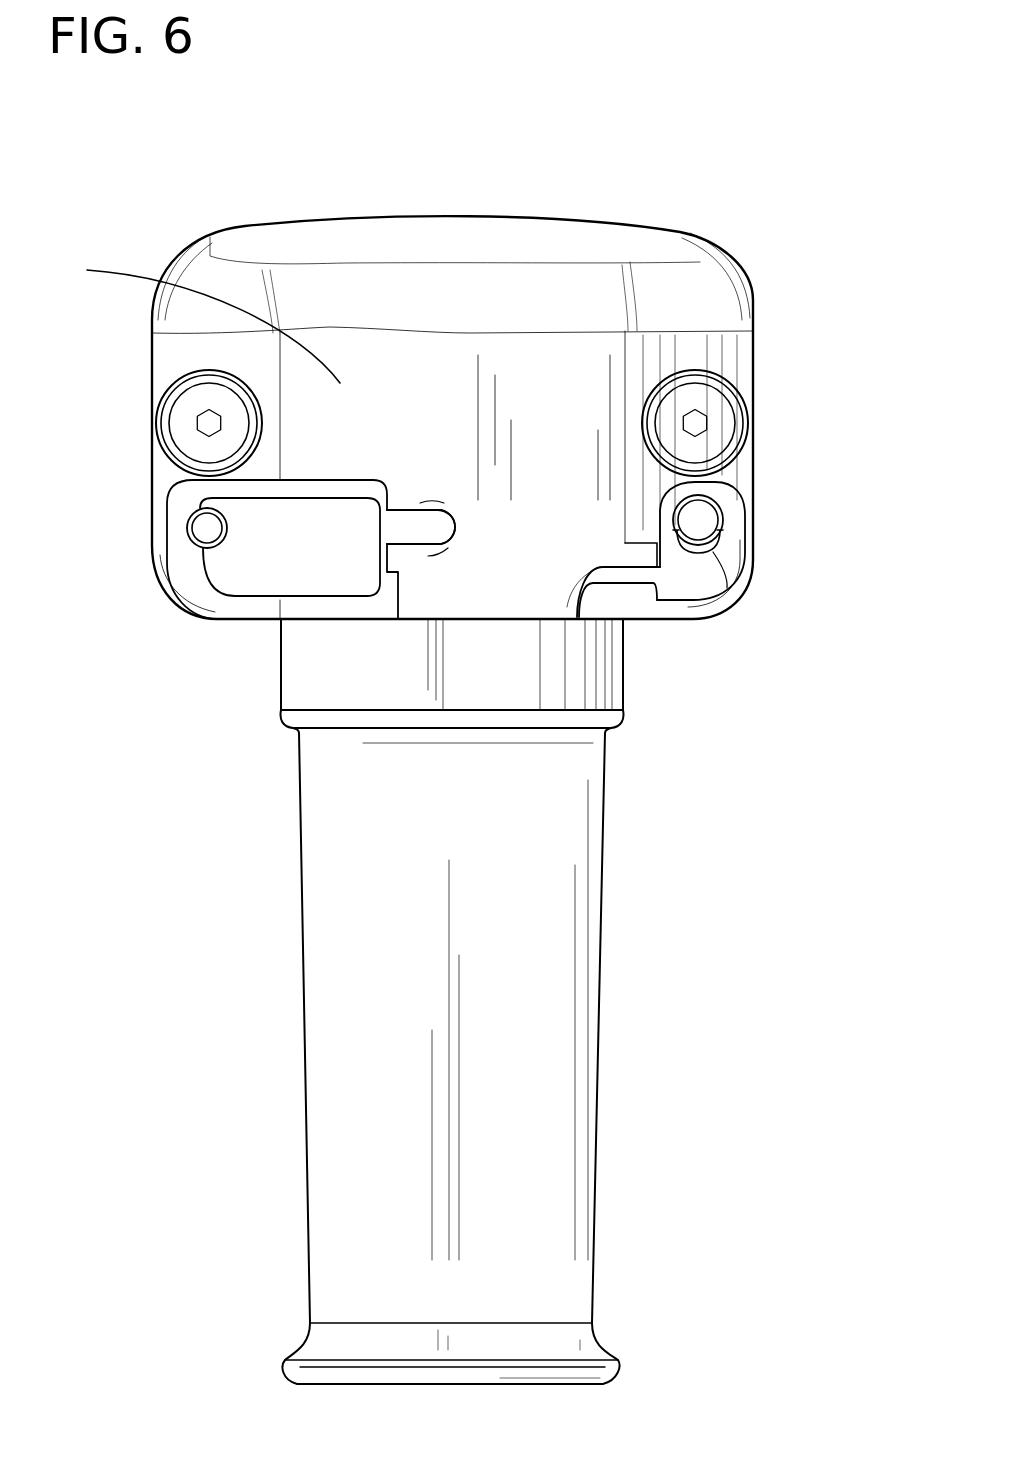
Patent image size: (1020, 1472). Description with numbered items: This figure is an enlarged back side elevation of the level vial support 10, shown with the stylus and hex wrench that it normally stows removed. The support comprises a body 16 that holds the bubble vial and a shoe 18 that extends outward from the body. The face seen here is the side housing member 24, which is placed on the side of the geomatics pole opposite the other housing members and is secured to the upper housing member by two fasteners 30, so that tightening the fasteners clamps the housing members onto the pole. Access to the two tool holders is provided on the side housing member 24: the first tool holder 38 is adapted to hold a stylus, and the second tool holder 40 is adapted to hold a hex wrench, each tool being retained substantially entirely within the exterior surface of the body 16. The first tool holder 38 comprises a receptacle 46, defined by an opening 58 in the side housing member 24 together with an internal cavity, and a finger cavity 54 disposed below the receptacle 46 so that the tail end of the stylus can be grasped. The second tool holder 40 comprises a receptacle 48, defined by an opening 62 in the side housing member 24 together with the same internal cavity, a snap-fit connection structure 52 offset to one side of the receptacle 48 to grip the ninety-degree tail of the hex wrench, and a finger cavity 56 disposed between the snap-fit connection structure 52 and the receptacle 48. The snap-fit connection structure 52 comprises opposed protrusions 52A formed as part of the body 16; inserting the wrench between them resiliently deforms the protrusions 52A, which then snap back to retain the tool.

The level vial support 10 is at (762, 217).
The body 16 is at (752, 348).
The shoe 18 is at (598, 1035).
The side housing member 24 is at (195, 318).
The fasteners 30 is at (185, 410).
The first tool holder 38 is at (734, 639).
The second tool holder 40 is at (183, 644).
The receptacle 46 is at (705, 512).
The receptacle 48 is at (193, 521).
The snap-fit connection structure 52 is at (407, 527).
The protrusions 52A is at (425, 502).
The finger cavity 54 is at (662, 591).
The finger cavity 56 is at (264, 563).
The opening 58 is at (722, 518).
The opening 62 is at (207, 548).